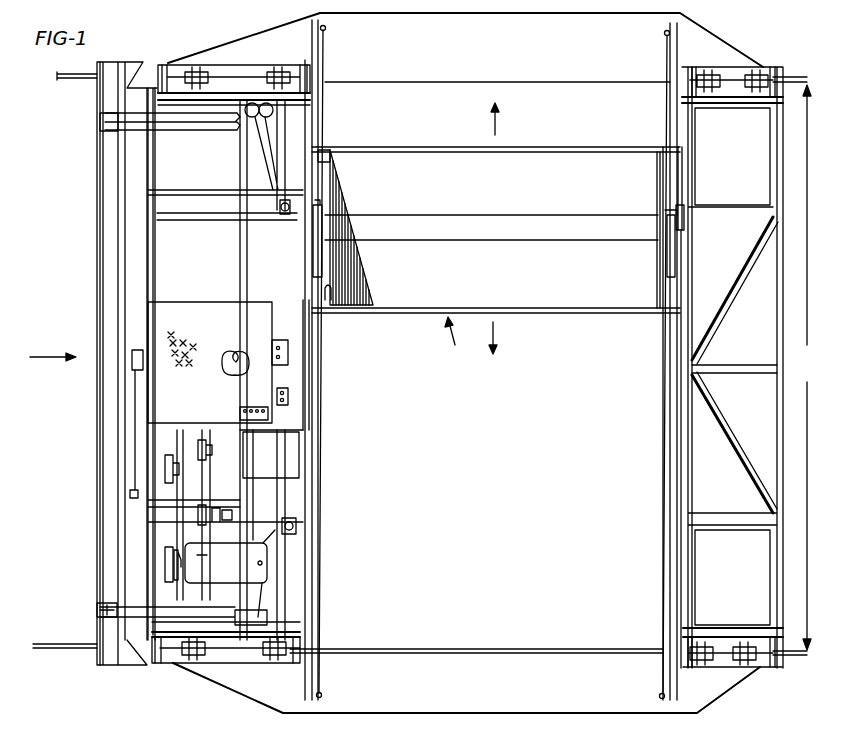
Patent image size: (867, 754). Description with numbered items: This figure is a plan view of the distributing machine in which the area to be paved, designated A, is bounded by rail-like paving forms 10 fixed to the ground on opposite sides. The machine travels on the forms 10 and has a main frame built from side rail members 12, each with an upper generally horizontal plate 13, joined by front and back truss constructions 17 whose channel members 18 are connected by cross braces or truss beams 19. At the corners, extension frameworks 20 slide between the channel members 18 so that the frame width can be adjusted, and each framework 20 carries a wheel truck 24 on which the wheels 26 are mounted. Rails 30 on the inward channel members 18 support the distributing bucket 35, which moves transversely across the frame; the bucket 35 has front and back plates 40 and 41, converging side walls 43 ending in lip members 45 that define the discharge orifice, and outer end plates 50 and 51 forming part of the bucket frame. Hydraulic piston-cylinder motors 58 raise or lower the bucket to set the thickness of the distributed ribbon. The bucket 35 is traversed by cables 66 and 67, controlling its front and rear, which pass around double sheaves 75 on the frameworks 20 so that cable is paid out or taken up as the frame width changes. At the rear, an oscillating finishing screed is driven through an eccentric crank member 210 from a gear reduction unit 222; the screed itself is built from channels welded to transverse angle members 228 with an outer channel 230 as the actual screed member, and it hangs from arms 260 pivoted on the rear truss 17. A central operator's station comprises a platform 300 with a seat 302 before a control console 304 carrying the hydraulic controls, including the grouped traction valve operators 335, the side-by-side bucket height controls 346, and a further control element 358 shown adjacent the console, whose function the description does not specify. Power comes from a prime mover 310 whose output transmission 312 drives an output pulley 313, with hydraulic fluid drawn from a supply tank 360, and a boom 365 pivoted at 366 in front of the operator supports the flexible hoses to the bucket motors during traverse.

The paving forms 10 is at (62, 78).
The side rail members 12 is at (431, 70).
The upper generally horizontal plate 13 is at (517, 77).
The truss constructions 17 is at (324, 477).
The channel members 18 is at (143, 248).
The cross braces or truss beams 19 is at (735, 285).
The frameworks 20 is at (169, 141).
The wheel truck 24 is at (168, 59).
The wheels 26 is at (200, 66).
The rails 30 is at (313, 593).
The distributing bucket 35 is at (472, 236).
The front plate 40 is at (657, 181).
The back plate 41 is at (331, 172).
The side walls 43 is at (563, 157).
The lip members 45 is at (492, 240).
The outer end plate 50 is at (680, 172).
The outer end plate 51 is at (324, 156).
The hydraulic piston-cylinder motor 58 is at (333, 270).
The cable 66 is at (662, 487).
The cable 67 is at (325, 557).
The double sheaves 75 is at (284, 215).
The eccentric crank member 210 is at (133, 352).
The gear reduction unit 222 is at (164, 463).
The transverse angle members 228 is at (100, 120).
The outer channel 230 is at (97, 281).
The arms 260 is at (211, 124).
The platform 300 is at (193, 313).
The seat 302 is at (233, 350).
The control console 304 is at (264, 392).
The prime mover 310 is at (230, 573).
The output transmission 312 is at (175, 567).
The output pulley 313 is at (170, 553).
The manual operators 335 is at (288, 347).
The side-by-side valve controls 346 is at (289, 396).
The terminal strip 358 is at (268, 416).
The supply tank 360 is at (299, 447).
The boom 365 is at (319, 318).
The pivotal mounting 366 is at (317, 363).
The area to be paved A is at (803, 367).